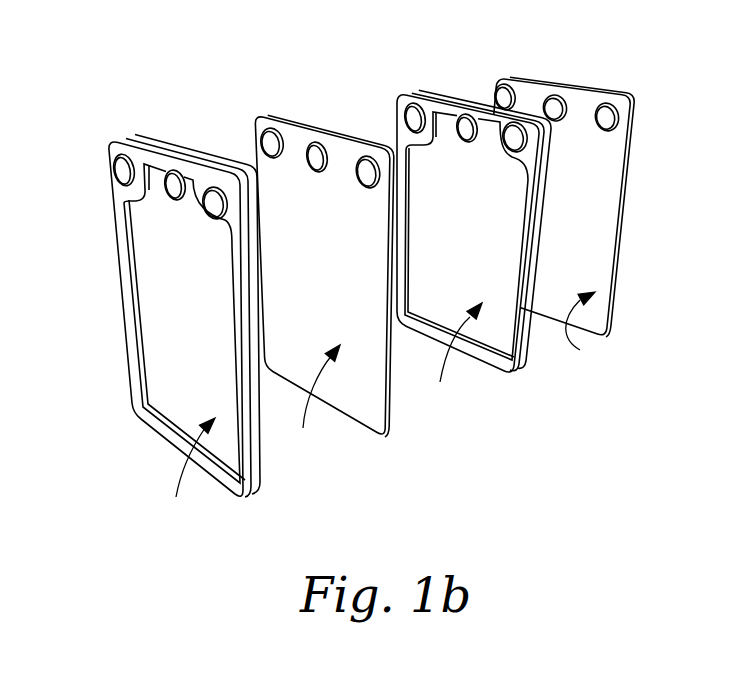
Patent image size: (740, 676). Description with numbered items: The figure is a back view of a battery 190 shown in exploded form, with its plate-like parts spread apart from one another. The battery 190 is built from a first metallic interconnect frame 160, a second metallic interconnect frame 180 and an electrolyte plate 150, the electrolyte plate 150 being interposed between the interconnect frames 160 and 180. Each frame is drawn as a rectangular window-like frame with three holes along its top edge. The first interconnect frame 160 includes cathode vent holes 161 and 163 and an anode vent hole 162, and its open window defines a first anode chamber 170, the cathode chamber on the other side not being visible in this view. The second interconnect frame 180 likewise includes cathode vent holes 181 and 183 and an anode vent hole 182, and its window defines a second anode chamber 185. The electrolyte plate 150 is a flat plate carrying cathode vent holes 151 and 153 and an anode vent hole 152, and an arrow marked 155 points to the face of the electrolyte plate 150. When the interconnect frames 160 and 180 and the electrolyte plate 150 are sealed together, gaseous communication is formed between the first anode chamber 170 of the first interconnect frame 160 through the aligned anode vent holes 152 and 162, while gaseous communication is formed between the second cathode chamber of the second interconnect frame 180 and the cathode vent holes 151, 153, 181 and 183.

The electrolyte plate 150 is at (402, 262).
The cathode vent hole 151 is at (366, 156).
The anode vent hole 152 is at (306, 165).
The cathode vent hole 153 is at (263, 143).
The plate surface 155 is at (460, 377).
The first metallic interconnect frame 160 is at (503, 219).
The cathode vent hole 161 is at (525, 152).
The anode vent hole 162 is at (437, 112).
The cathode vent hole 163 is at (398, 105).
The first anode chamber 170 is at (448, 362).
The second metallic interconnect frame 180 is at (144, 330).
The cathode vent hole 181 is at (211, 220).
The anode vent hole 182 is at (170, 198).
The cathode vent hole 183 is at (117, 166).
The second anode chamber 185 is at (182, 477).
The battery 190 is at (371, 277).